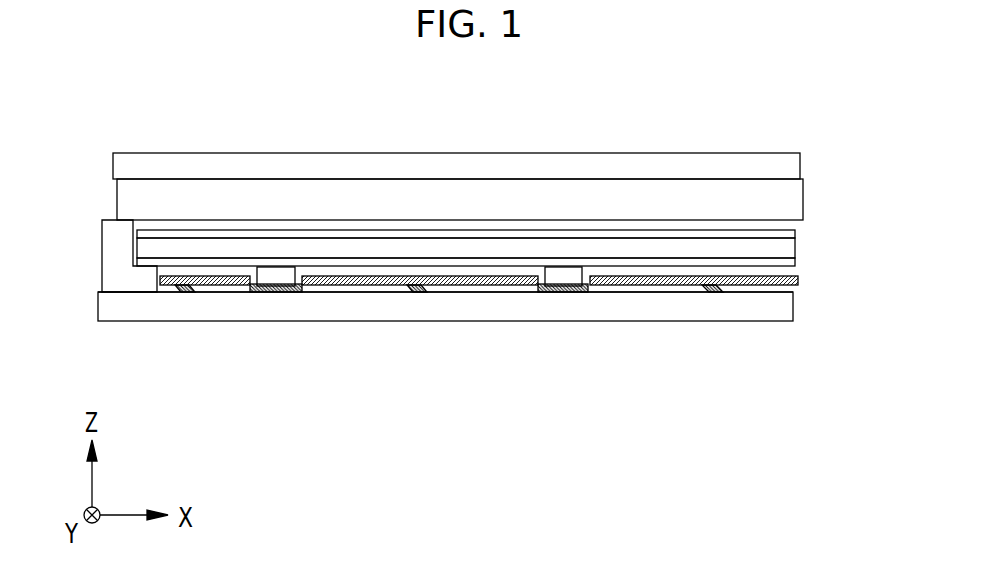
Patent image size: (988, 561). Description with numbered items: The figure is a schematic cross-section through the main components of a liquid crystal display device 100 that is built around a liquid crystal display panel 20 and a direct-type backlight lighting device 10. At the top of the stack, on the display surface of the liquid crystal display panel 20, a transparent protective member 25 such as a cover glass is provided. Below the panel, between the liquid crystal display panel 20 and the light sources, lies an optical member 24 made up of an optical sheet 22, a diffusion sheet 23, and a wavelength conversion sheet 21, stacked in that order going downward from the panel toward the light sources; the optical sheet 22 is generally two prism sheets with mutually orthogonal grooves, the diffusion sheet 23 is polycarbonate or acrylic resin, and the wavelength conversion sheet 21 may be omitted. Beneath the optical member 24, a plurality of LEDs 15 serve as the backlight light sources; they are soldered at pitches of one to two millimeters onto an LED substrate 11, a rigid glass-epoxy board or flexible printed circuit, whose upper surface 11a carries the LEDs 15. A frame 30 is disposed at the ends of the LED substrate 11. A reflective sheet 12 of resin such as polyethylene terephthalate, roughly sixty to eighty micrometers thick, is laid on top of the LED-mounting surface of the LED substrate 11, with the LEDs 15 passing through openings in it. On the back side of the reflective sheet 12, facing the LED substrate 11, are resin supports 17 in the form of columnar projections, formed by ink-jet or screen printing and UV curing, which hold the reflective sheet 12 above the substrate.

The liquid crystal display device 100 is at (678, 137).
The lighting device 10 is at (98, 250).
The LED substrate 11 is at (464, 313).
The mounting surface of substrate 11a is at (507, 301).
The reflective sheet 12 is at (223, 284).
The LEDs 15 is at (267, 283).
The supports 17 is at (188, 293).
The liquid crystal display panel 20 is at (425, 200).
The wavelength conversion sheet 21 is at (795, 262).
The optical sheet 22 is at (795, 232).
The diffusion sheet 23 is at (781, 248).
The optical member 24 is at (867, 190).
The transparent protective member 25 is at (293, 165).
The frame 30 is at (105, 230).